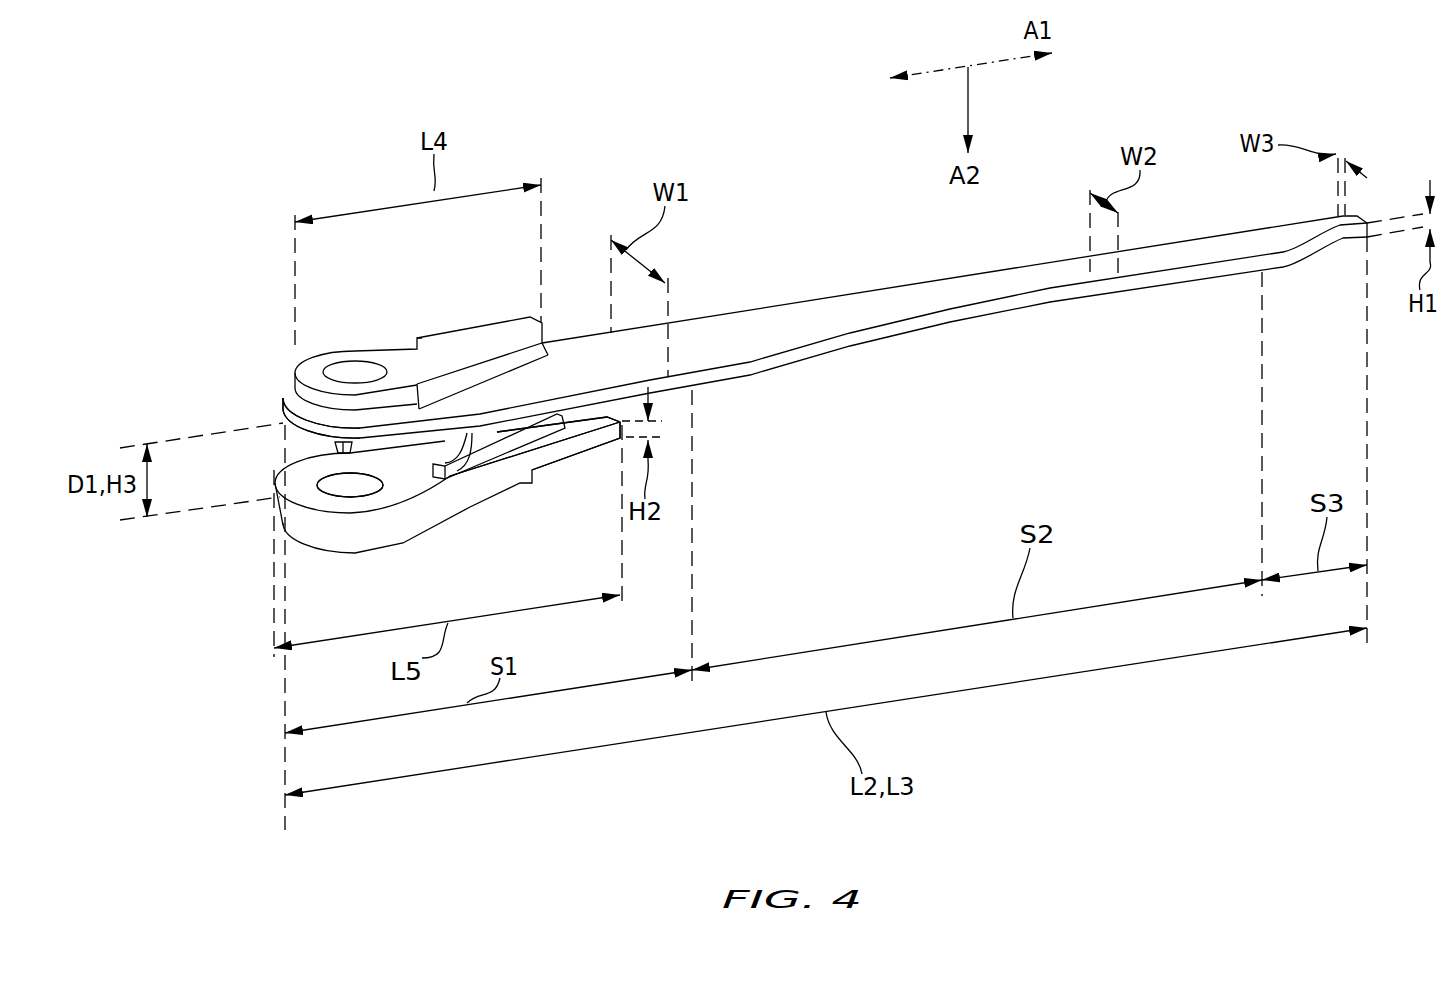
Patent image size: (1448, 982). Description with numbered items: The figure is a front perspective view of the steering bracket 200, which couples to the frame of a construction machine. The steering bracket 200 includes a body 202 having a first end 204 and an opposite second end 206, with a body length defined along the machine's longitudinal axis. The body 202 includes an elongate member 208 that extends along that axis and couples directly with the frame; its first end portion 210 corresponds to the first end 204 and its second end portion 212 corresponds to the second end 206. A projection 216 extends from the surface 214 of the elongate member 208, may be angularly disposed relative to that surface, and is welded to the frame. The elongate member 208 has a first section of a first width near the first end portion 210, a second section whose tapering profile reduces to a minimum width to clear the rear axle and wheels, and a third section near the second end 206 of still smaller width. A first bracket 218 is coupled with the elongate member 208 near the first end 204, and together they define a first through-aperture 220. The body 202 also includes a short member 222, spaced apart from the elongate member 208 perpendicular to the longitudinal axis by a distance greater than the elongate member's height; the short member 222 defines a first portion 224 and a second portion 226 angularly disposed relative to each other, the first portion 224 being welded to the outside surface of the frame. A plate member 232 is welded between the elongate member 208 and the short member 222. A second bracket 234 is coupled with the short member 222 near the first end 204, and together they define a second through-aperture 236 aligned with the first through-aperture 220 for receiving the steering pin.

The steering bracket 200 is at (222, 91).
The body 202 is at (363, 324).
The first end 204 is at (222, 391).
The first end portion 210 is at (281, 403).
The second end 206 is at (1391, 167).
The second end portion 212 is at (1370, 217).
The elongate member 208 is at (838, 308).
The surface 214 is at (742, 306).
The projection 216 is at (347, 350).
The first bracket 218 is at (458, 338).
The first through-aperture 220 is at (352, 378).
The short member 222 is at (363, 515).
The first portion 224 is at (577, 442).
The second portion 226 is at (332, 437).
The plate member 232 is at (497, 433).
The second bracket 234 is at (448, 512).
The second through-aperture 236 is at (346, 481).